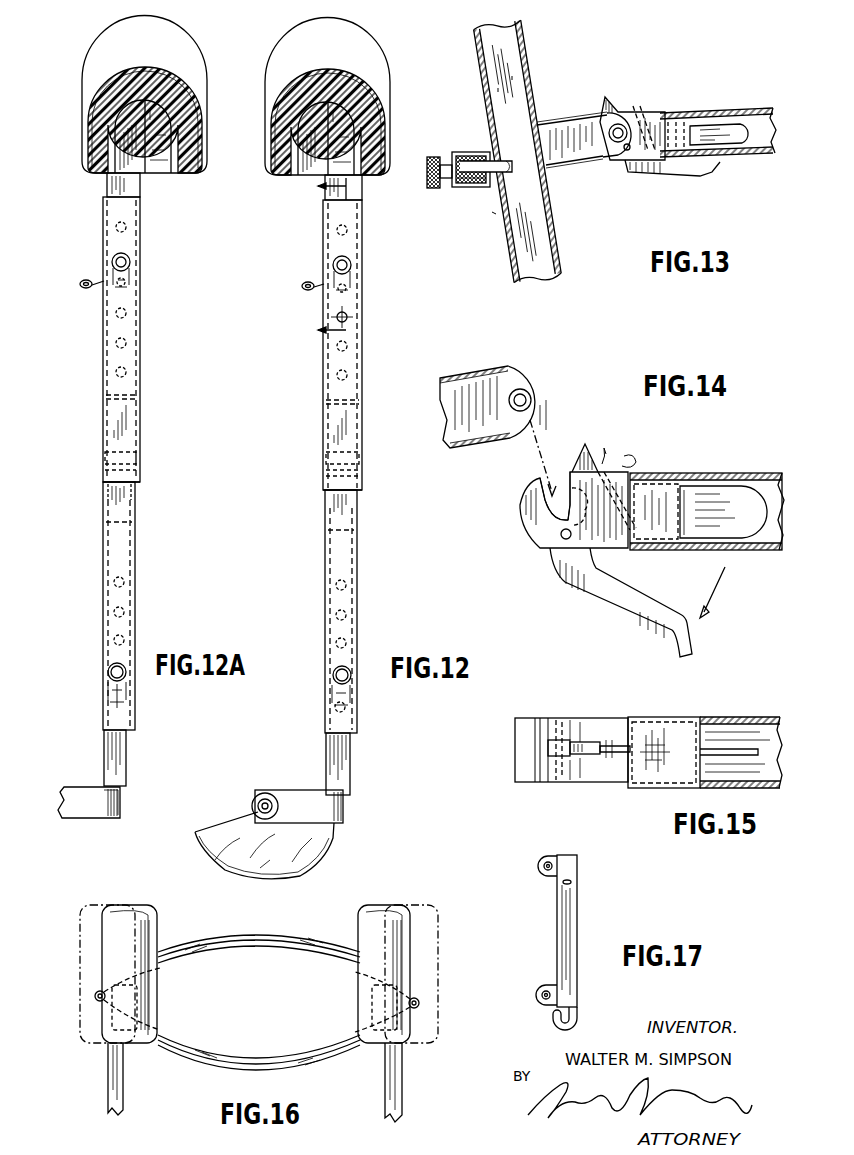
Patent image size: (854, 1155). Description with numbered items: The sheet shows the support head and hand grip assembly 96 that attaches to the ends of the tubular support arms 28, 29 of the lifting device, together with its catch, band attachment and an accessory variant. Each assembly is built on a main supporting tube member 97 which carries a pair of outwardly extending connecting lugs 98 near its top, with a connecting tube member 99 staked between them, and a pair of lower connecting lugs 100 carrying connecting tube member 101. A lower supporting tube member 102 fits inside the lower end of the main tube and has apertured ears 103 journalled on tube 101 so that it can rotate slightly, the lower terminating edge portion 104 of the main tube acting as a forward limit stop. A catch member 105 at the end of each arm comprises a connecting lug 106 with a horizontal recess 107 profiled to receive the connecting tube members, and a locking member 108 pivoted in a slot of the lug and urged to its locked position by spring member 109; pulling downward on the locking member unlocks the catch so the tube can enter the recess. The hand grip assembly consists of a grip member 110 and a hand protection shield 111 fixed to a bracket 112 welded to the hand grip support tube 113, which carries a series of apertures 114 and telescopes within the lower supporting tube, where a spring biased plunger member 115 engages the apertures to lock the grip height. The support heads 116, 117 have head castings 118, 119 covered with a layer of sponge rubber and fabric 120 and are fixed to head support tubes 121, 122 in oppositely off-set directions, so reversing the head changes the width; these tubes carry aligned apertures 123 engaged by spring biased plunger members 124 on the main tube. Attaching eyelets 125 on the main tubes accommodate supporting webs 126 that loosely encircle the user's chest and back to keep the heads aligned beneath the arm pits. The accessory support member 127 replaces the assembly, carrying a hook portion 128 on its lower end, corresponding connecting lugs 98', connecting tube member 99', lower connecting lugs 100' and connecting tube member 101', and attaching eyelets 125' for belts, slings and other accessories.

In FIG. 13, the tubular support arm 28 is at (745, 108).
In FIG. 14, the tubular support arm 28 is at (730, 476).
In FIG. 15, the tubular support arm 28 is at (722, 718).
In FIG. 16, the tubular support arm 28 is at (384, 1090).
In FIG. 16, the tubular arm member 29 is at (124, 1092).
In FIG. 12A, the support and hand grip assembly 96 is at (150, 411).
In FIG. 12, the support and hand grip assembly 96 is at (368, 482).
In FIG. 12A, the main supporting tube member 97 is at (140, 381).
In FIG. 12, the main supporting tube member 97 is at (362, 388).
In FIG. 13, the main supporting tube member 97 is at (558, 262).
In FIG. 13, the connecting lugs 98 is at (584, 128).
In FIG. 14, the connecting lugs 98 is at (498, 420).
In FIG. 13, the connecting tube member 99 is at (595, 141).
In FIG. 14, the connecting tube member 99 is at (547, 394).
In FIG. 12A, the lower connecting lugs 100 is at (140, 487).
In FIG. 12, the lower connecting lugs 100 is at (317, 490).
In FIG. 12, the connecting tube member 101 is at (363, 451).
In FIG. 12A, the lower supporting tube member 102 is at (103, 620).
In FIG. 12, the lower supporting tube member 102 is at (358, 582).
In FIG. 12A, the ears 103 is at (104, 466).
In FIG. 12, the ears 103 is at (322, 470).
In FIG. 12A, the lower terminating edge portion 104 is at (110, 488).
In FIG. 13, the catch member 105 is at (628, 176).
In FIG. 14, the catch member 105 is at (548, 576).
In FIG. 13, the connecting lug 106 is at (612, 160).
In FIG. 14, the connecting lug 106 is at (526, 528).
In FIG. 15, the connecting lug 106 is at (522, 772).
In FIG. 14, the horizontal recess 107 is at (540, 512).
In FIG. 15, the horizontal recess 107 is at (552, 722).
In FIG. 13, the locking member 108 is at (675, 170).
In FIG. 14, the locking member 108 is at (622, 606).
In FIG. 15, the locking member 108 is at (588, 742).
In FIG. 13, the spring member 109 is at (641, 106).
In FIG. 14, the spring member 109 is at (608, 465).
In FIG. 15, the spring member 109 is at (618, 756).
In FIG. 12, the grip member 110 is at (262, 792).
In FIG. 12, the hand protection shield 111 is at (320, 848).
In FIG. 12A, the bracket 112 is at (84, 800).
In FIG. 12, the bracket 112 is at (330, 810).
In FIG. 12A, the hand grip support tube 113 is at (126, 766).
In FIG. 12, the hand grip support tube 113 is at (350, 761).
In FIG. 12, the apertures 114 is at (334, 592).
In FIG. 12, the spring biased plunger member 115 is at (350, 672).
In FIG. 12A, the support head 116 is at (78, 70).
In FIG. 16, the support head 116 is at (82, 924).
In FIG. 12, the support head 117 is at (262, 72).
In FIG. 16, the support head 117 is at (150, 908).
In FIG. 12A, the head casting 118 is at (157, 168).
In FIG. 12, the head casting 119 is at (304, 180).
In FIG. 12A, the layer of sponge rubber and fabric 120 is at (84, 142).
In FIG. 12, the layer of sponge rubber and fabric 120 is at (366, 102).
In FIG. 12A, the head support tube 121 is at (106, 186).
In FIG. 12, the head support tube 122 is at (363, 180).
In FIG. 13, the head support tube 122 is at (521, 58).
In FIG. 12A, the aligned apertures 123 is at (128, 312).
In FIG. 12, the aligned apertures 123 is at (348, 292).
In FIG. 13, the aligned apertures 123 is at (490, 128).
In FIG. 12A, the spring biased plunger member 124 is at (131, 263).
In FIG. 12, the spring biased plunger member 124 is at (335, 266).
In FIG. 13, the spring biased plunger member 124 is at (476, 188).
In FIG. 12A, the attaching eyelet 125 is at (77, 295).
In FIG. 12, the attaching eyelet 125 is at (302, 298).
In FIG. 16, the attaching eyelet 125 is at (258, 1000).
In FIG. 16, the supporting web 126 is at (216, 1060).
In FIG. 17, the accessory support member 127 is at (578, 926).
In FIG. 17, the hook portion 128 is at (582, 1032).
In FIG. 17, the connecting lugs 98' is at (532, 859).
In FIG. 17, the connecting tube member 99' is at (530, 870).
In FIG. 17, the lower connecting lugs 100' is at (531, 986).
In FIG. 17, the connecting tube member 101' is at (528, 1003).
In FIG. 17, the attaching eyelet 125' is at (595, 882).